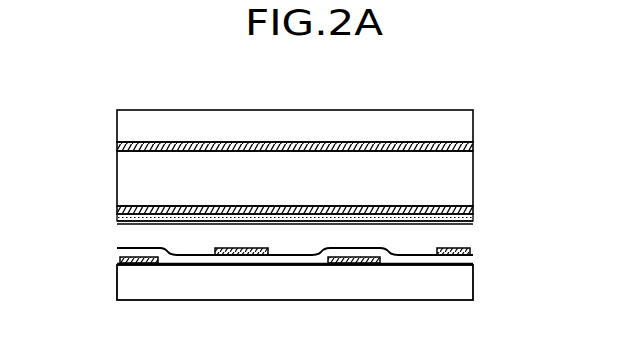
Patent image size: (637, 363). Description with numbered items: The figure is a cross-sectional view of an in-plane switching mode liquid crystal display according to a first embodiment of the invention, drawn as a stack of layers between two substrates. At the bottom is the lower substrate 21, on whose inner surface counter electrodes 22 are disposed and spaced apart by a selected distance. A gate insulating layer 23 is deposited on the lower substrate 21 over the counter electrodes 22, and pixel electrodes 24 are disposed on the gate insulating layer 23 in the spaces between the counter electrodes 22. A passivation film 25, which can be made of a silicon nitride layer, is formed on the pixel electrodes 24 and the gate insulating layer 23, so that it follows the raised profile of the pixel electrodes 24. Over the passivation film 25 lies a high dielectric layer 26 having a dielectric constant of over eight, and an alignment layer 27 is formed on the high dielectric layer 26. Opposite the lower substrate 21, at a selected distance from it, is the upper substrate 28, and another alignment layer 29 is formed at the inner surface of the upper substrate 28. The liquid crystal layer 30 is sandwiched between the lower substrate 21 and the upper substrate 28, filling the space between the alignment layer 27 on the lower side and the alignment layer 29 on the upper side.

The lower substrate 21 is at (462, 292).
The counter electrodes 22 is at (122, 259).
The gate insulating layer 23 is at (462, 261).
The pixel electrodes 24 is at (473, 247).
The passivation film 25 is at (122, 230).
The high dielectric layer 26 is at (462, 217).
The alignment layer 27 is at (122, 210).
The upper substrate 28 is at (462, 125).
The alignment layer 29 is at (465, 145).
The liquid crystal layer 30 is at (126, 175).